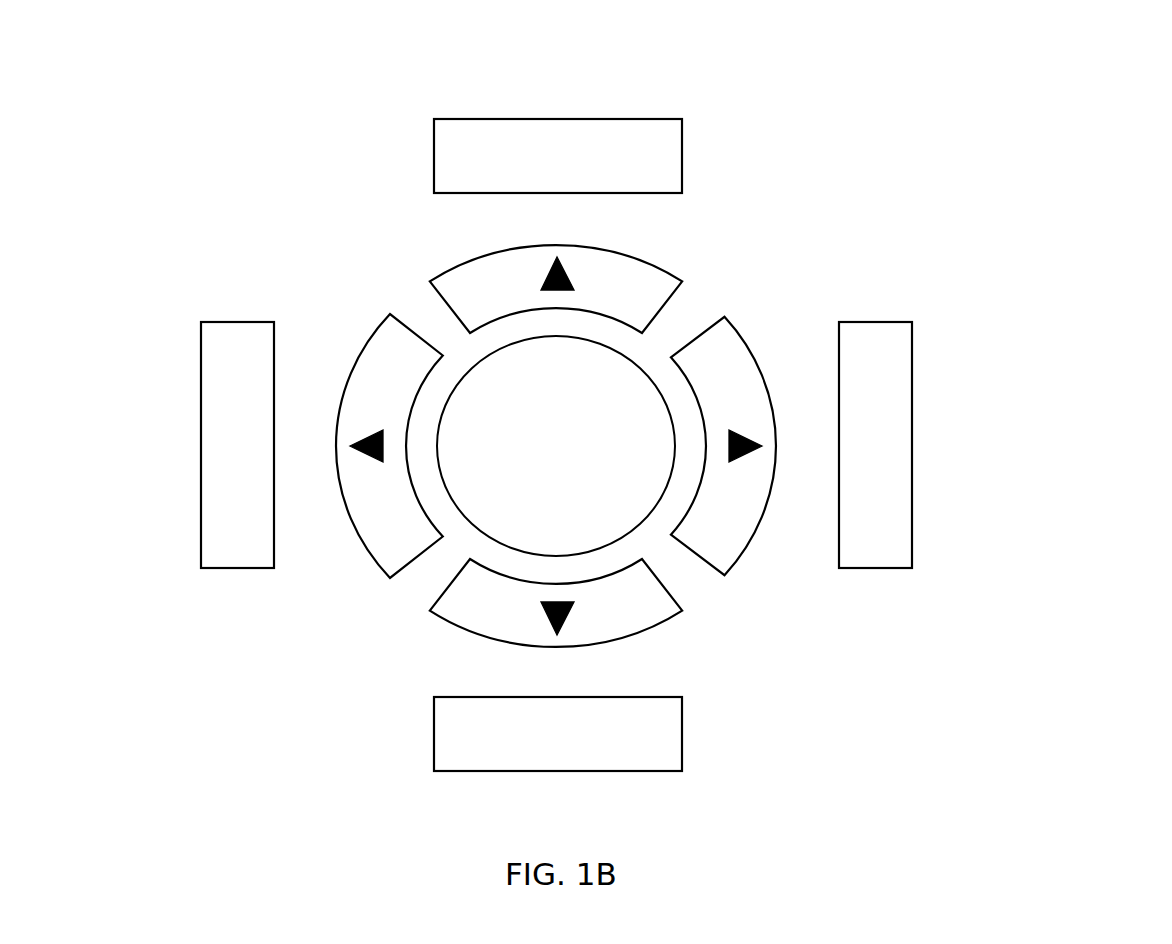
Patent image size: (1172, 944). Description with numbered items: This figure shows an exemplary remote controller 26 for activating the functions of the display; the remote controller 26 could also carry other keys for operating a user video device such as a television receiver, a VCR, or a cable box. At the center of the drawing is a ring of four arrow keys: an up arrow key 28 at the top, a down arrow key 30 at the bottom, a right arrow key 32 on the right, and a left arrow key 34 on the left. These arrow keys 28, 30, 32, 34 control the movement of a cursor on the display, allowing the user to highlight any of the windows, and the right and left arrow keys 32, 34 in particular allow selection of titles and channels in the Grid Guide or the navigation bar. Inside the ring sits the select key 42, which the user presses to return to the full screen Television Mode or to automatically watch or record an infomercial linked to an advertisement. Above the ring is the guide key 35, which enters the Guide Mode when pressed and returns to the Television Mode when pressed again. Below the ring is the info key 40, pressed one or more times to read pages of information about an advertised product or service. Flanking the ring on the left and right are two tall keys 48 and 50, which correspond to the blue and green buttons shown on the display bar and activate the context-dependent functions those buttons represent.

The remote controller 26 is at (1068, 75).
The up arrow key 28 is at (682, 282).
The down arrow key 30 is at (430, 608).
The right arrow key 32 is at (738, 336).
The left arrow key 34 is at (385, 568).
The guide key 35 is at (437, 137).
The info key 40 is at (435, 756).
The select key 42 is at (643, 517).
The key corresponding to blue button 48 is at (210, 565).
The key corresponding to green button 50 is at (902, 566).